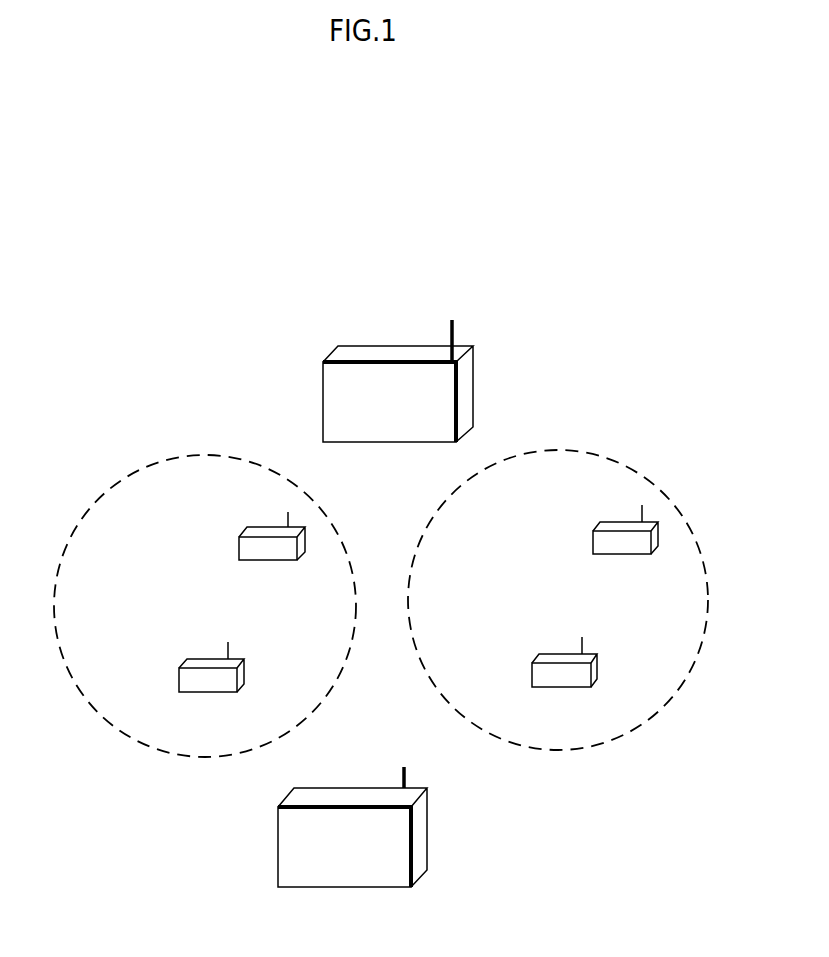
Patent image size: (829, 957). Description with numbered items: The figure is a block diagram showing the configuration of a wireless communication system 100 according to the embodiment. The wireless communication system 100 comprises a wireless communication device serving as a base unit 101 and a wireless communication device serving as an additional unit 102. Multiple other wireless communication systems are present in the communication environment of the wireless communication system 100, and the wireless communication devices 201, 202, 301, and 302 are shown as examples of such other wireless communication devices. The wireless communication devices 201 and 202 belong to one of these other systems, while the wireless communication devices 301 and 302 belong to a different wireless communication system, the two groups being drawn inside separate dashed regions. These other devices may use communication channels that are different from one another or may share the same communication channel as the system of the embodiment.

The wireless communication system 100 is at (470, 290).
The wireless communication device (base unit) 101 is at (337, 347).
The wireless communication device (additional unit) 102 is at (278, 841).
The wireless communication device 201 is at (302, 541).
The wireless communication device 202 is at (245, 664).
The wireless communication device 301 is at (655, 535).
The wireless communication device 302 is at (591, 659).